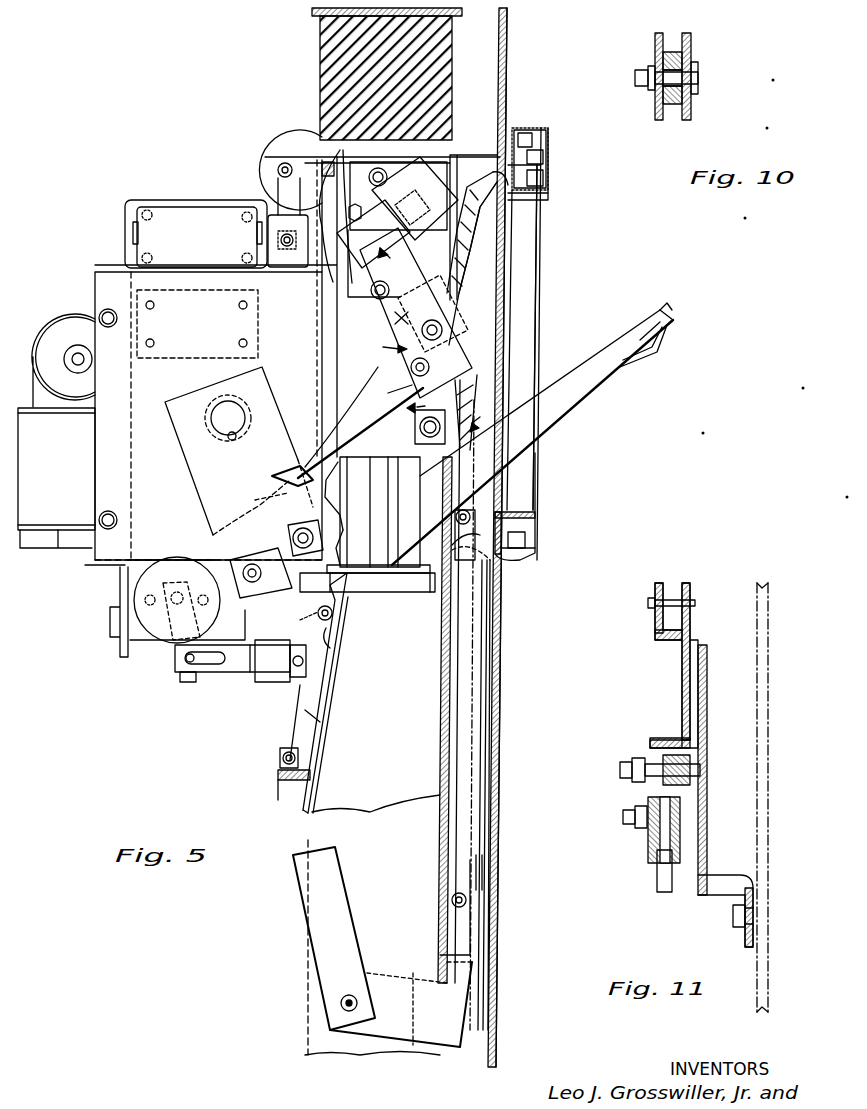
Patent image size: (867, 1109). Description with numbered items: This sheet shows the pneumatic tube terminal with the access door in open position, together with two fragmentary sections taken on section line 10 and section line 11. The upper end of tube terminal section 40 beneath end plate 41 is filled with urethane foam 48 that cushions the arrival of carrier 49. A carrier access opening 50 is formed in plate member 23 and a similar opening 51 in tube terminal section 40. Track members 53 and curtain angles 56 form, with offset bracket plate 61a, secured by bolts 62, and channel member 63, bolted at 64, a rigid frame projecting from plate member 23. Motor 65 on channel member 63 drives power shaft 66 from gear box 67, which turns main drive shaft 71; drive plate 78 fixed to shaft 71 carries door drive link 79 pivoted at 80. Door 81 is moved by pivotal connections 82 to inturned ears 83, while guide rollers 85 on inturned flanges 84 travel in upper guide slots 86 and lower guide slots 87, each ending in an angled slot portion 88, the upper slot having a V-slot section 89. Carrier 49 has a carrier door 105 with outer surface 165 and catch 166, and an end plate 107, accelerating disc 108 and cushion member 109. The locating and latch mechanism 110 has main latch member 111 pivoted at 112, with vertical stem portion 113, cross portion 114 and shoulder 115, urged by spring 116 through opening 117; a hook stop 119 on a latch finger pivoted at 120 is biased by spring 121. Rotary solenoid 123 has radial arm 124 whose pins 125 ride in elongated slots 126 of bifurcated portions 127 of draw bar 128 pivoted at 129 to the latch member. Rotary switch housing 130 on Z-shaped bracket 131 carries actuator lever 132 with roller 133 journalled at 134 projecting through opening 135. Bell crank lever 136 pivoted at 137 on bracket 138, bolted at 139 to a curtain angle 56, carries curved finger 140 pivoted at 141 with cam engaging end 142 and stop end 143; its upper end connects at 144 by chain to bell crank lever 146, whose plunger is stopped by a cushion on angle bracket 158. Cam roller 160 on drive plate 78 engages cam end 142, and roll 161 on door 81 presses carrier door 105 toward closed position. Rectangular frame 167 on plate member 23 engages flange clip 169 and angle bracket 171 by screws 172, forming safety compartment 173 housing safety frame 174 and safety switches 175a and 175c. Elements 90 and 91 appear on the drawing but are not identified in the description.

In FIG. 5, the section line 10 is at (402, 393).
In FIG. 5, the section line 11 is at (441, 349).
In FIG. 5, the plate member 23 is at (492, 750).
In FIG. 5, the tube terminal section 40 is at (305, 995).
In FIG. 5, the end plate 41 is at (318, 12).
In FIG. 5, the urethane foam 48 is at (330, 60).
In FIG. 5, the carrier 49 is at (405, 492).
In FIG. 5, the carrier access opening 50 is at (545, 200).
In FIG. 5, the opening 51 is at (470, 572).
In FIG. 5, the track members 53 is at (482, 165).
In FIG. 5, the curtain angles 56 is at (330, 158).
In FIG. 11, the curtain angles 56 is at (768, 715).
In FIG. 5, the offset bracket plate 61a is at (302, 355).
In FIG. 5, the bolts 62 is at (395, 318).
In FIG. 5, the channel member 63 is at (133, 470).
In FIG. 5, the bolts 64 is at (109, 327).
In FIG. 5, the motor 65 is at (35, 530).
In FIG. 5, the power shaft 66 is at (78, 353).
In FIG. 5, the gear box 67 is at (45, 348).
In FIG. 5, the main drive shaft 71 is at (240, 410).
In FIG. 5, the drive plate 78 is at (226, 484).
In FIG. 5, the door drive link 79 is at (234, 560).
In FIG. 5, the pivot 80 is at (254, 563).
In FIG. 5, the door 81 is at (478, 880).
In FIG. 5, the pivotal connections 82 is at (348, 1012).
In FIG. 5, the inturned ears 83 is at (388, 1030).
In FIG. 5, the inturned flanges 84 is at (465, 796).
In FIG. 5, the guide rollers 85 is at (482, 505).
In FIG. 5, the upper guide slots 86 is at (480, 224).
In FIG. 5, the lower guide slots 87 is at (495, 648).
In FIG. 5, the angled slot portion 88 is at (490, 192).
In FIG. 5, the V-slot section 89 is at (463, 266).
In FIG. 5, the strip 90 is at (478, 852).
In FIG. 5, the strip 91 is at (485, 700).
In FIG. 5, the carrier door 105 is at (565, 404).
In FIG. 5, the end plate 107 is at (405, 567).
In FIG. 5, the accelerating disc 108 is at (388, 573).
In FIG. 5, the cushion member 109 is at (322, 150).
In FIG. 5, the locating and latch mechanism 110 is at (280, 720).
In FIG. 5, the main latch member 111 is at (320, 722).
In FIG. 5, the pivot 112 is at (282, 758).
In FIG. 5, the vertical stem portion 113 is at (318, 700).
In FIG. 5, the cross portion 114 is at (330, 686).
In FIG. 5, the shoulder 115 is at (357, 567).
In FIG. 5, the spring 116 is at (300, 795).
In FIG. 5, the opening 117 is at (316, 750).
In FIG. 5, the hook stop 119 is at (333, 540).
In FIG. 5, the pivot 120 is at (333, 616).
In FIG. 5, the spring 121 is at (333, 640).
In FIG. 5, the rotary solenoid 123 is at (157, 647).
In FIG. 5, the radial arm 124 is at (184, 683).
In FIG. 5, the pins 125 is at (180, 662).
In FIG. 5, the elongated slots 126 is at (214, 665).
In FIG. 5, the bifurcated portions 127 is at (238, 668).
In FIG. 5, the draw bar 128 is at (262, 650).
In FIG. 5, the pivot 129 is at (304, 651).
In FIG. 5, the rotary switch housing 130 is at (128, 212).
In FIG. 5, the Z-shaped bracket 131 is at (162, 203).
In FIG. 5, the radial arm actuator lever 132 is at (288, 268).
In FIG. 5, the roller 133 is at (275, 152).
In FIG. 5, the journal 134 is at (278, 170).
In FIG. 5, the opening 135 is at (340, 255).
In FIG. 5, the bell crank lever 136 is at (430, 363).
In FIG. 10, the bell crank lever 136 is at (656, 48).
In FIG. 11, the bell crank lever 136 is at (690, 640).
In FIG. 5, the pivot 137 is at (443, 331).
In FIG. 11, the pivot 137 is at (618, 770).
In FIG. 5, the bracket 138 is at (405, 325).
In FIG. 11, the bracket 138 is at (708, 705).
In FIG. 5, the bolts 139 is at (382, 170).
In FIG. 11, the bolts 139 is at (733, 915).
In FIG. 5, the curved finger 140 is at (352, 423).
In FIG. 10, the curved finger 140 is at (672, 100).
In FIG. 11, the curved finger 140 is at (657, 880).
In FIG. 5, the pivot 141 is at (391, 391).
In FIG. 10, the pivot 141 is at (700, 75).
In FIG. 11, the pivot 141 is at (640, 830).
In FIG. 5, the cam engaging outer end 142 is at (280, 470).
In FIG. 5, the stop end 143 is at (452, 340).
In FIG. 11, the connection 144 is at (696, 603).
In FIG. 5, the bell crank lever 146 is at (374, 292).
In FIG. 5, the angle bracket 158 is at (458, 162).
In FIG. 5, the cam roller 160 is at (296, 530).
In FIG. 5, the carrier door engaging roll 161 is at (458, 512).
In FIG. 5, the outer surface 165 is at (548, 430).
In FIG. 5, the catch 166 is at (670, 308).
In FIG. 5, the rectangular frame 167 is at (545, 135).
In FIG. 5, the flange clip 169 is at (527, 133).
In FIG. 5, the angle bracket 171 is at (525, 525).
In FIG. 5, the screws 172 is at (530, 545).
In FIG. 5, the safety compartment 173 is at (540, 132).
In FIG. 5, the movable frame member 174 is at (525, 351).
In FIG. 5, the safety switch 175a is at (543, 142).
In FIG. 5, the safety switch 175c is at (545, 172).